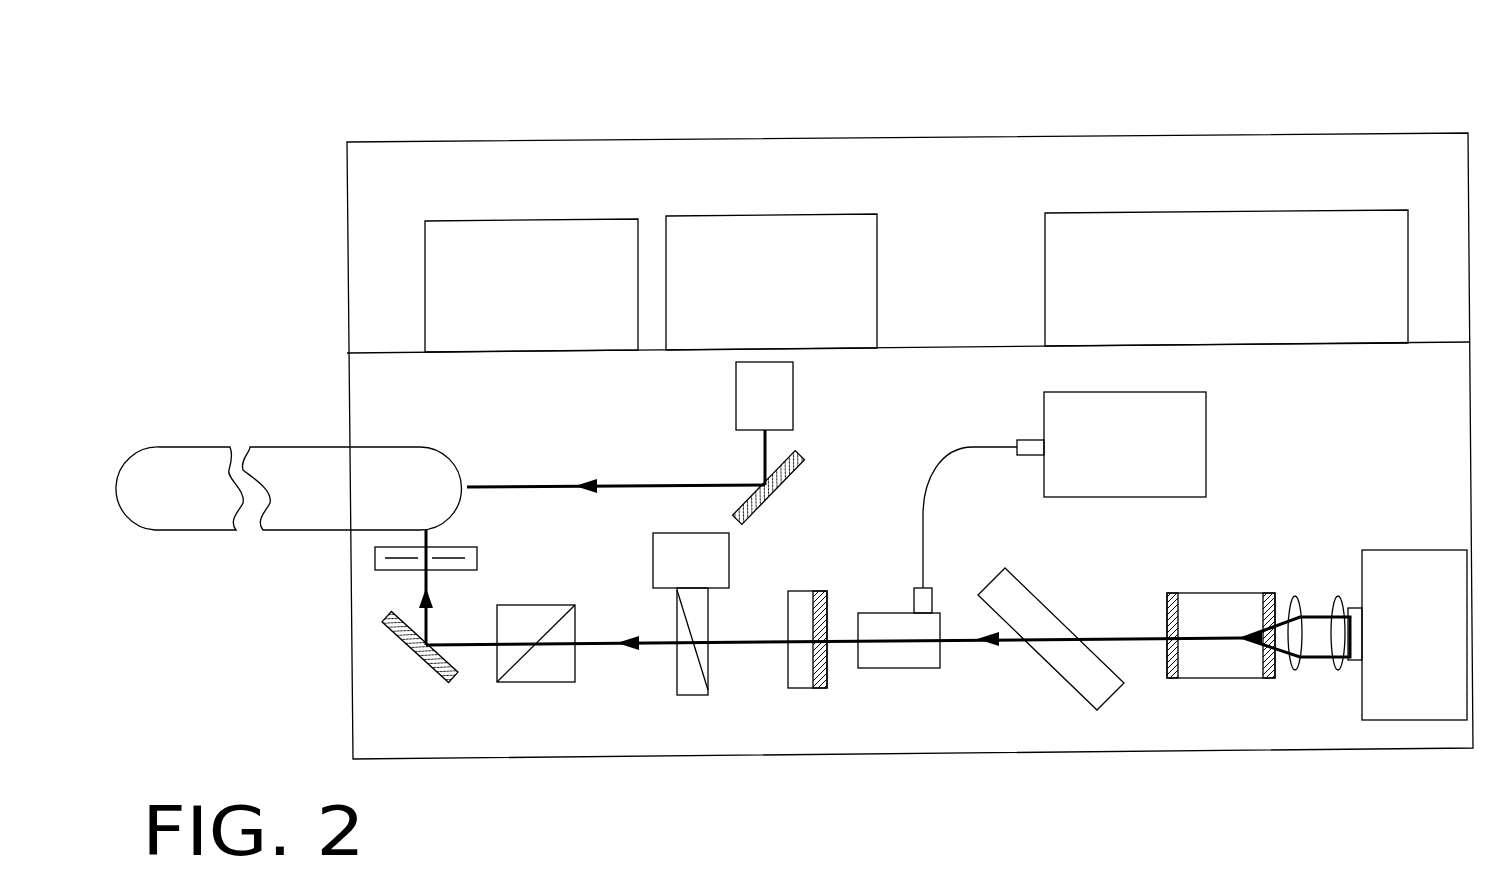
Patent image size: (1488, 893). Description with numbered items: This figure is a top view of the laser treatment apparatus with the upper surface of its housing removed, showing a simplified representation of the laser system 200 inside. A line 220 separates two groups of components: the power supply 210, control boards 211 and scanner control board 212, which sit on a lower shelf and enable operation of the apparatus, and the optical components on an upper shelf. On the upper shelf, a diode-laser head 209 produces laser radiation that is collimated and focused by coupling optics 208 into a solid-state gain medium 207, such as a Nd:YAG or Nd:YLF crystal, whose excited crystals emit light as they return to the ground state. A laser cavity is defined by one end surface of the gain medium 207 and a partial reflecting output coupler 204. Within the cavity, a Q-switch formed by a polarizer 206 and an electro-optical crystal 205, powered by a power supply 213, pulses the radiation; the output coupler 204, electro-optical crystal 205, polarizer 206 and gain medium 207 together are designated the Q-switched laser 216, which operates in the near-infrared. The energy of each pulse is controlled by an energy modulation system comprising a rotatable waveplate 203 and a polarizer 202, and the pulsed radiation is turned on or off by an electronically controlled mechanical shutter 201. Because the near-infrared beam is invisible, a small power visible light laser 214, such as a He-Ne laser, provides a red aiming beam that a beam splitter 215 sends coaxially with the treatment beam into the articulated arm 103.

The articulated arm 103 is at (198, 457).
The laser system 200 is at (369, 157).
The mechanical shutter 201 is at (375, 565).
The polarizer 202 is at (538, 665).
The rotatable waveplate 203 is at (685, 687).
The partial reflecting output coupler 204 is at (793, 683).
The electro-optical crystal 205 is at (878, 658).
The polarizer 206 is at (1050, 653).
The gain medium 207 is at (1213, 667).
The coupling optics 208 is at (1338, 668).
The diode-laser head 209 is at (1420, 707).
The power supply 210 is at (1226, 278).
The control boards 211 is at (771, 282).
The scanner control board 212 is at (531, 285).
The power supply 213 is at (1111, 444).
The visible light laser 214 is at (755, 391).
The beam splitter 215 is at (803, 462).
The Q-switched laser 216 is at (762, 818).
The line separating the two groups of components 220 is at (992, 347).